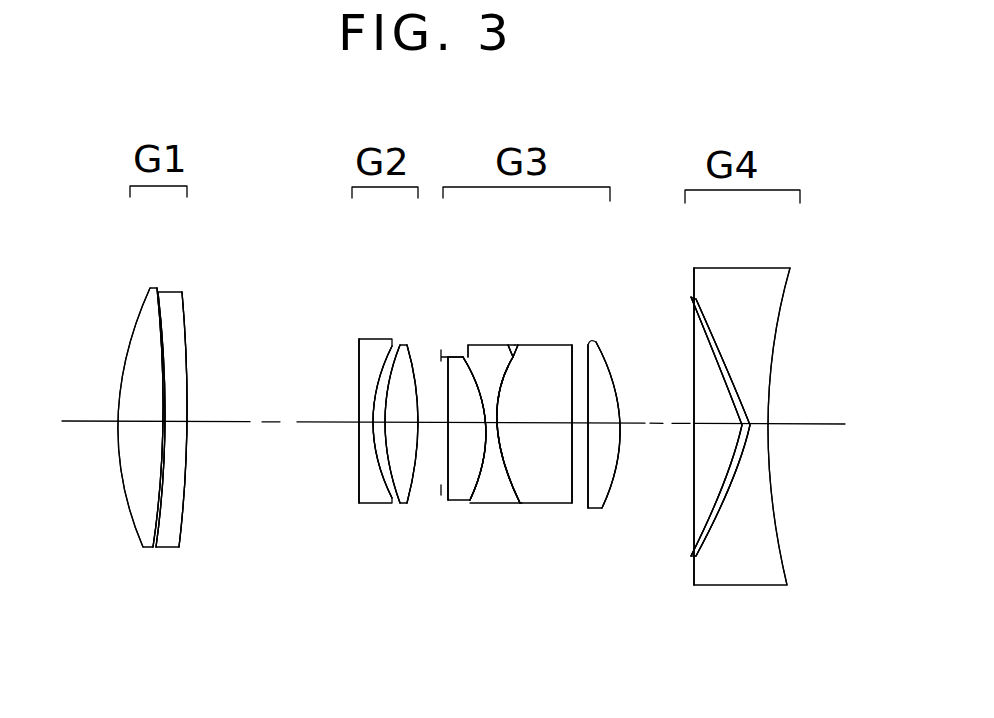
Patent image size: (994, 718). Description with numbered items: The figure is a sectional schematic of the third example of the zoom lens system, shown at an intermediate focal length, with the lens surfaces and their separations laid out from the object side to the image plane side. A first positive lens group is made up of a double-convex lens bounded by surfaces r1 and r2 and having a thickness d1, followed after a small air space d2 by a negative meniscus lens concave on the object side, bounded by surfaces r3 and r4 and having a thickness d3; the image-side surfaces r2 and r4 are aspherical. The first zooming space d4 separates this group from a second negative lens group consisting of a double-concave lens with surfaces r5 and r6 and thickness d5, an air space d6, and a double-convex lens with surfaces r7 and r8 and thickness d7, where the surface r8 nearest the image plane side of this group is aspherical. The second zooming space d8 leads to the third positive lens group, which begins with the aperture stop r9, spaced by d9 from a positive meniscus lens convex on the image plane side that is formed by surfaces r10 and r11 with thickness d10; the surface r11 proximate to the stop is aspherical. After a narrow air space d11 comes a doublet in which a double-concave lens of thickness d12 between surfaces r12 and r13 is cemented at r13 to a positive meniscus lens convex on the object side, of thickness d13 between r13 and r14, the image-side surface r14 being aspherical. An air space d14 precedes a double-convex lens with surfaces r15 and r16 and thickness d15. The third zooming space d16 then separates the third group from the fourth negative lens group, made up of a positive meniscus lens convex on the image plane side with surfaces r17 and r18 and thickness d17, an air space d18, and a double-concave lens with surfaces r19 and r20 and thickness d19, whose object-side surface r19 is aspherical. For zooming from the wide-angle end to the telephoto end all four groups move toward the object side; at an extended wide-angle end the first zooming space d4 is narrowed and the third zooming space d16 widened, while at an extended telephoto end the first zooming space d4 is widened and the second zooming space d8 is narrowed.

The radius of curvature of first lens surface r1 is at (142, 316).
The radius of curvature of second lens surface r2 is at (147, 320).
The radius of curvature of third lens surface r3 is at (164, 320).
The radius of curvature of fourth lens surface r4 is at (186, 320).
The radius of curvature of fifth lens surface r5 is at (359, 361).
The radius of curvature of sixth lens surface r6 is at (372, 339).
The radius of curvature of seventh lens surface r7 is at (401, 345).
The radius of curvature of eighth lens surface r8 is at (413, 355).
The aperture stop r9 is at (438, 370).
The radius of curvature of tenth lens surface r10 is at (458, 357).
The radius of curvature of eleventh lens surface r11 is at (468, 345).
The radius of curvature of twelfth lens surface r12 is at (490, 345).
The radius of curvature of thirteenth lens surface r13 is at (508, 345).
The radius of curvature of fourteenth lens surface r14 is at (572, 373).
The radius of curvature of fifteenth lens surface r15 is at (588, 362).
The radius of curvature of sixteenth lens surface r16 is at (602, 358).
The radius of curvature of seventeenth lens surface r17 is at (690, 323).
The radius of curvature of eighteenth lens surface r18 is at (716, 327).
The radius of curvature of nineteenth lens surface r19 is at (727, 325).
The radius of curvature of twentieth lens surface r20 is at (790, 298).
The separation between first and second lens surfaces d1 is at (140, 417).
The separation between second and third lens surfaces d2 is at (163, 447).
The separation between third and fourth lens surfaces d3 is at (176, 423).
The first zooming space d4 is at (269, 419).
The separation between fifth and sixth lens surfaces d5 is at (370, 424).
The separation between sixth and seventh lens surfaces d6 is at (381, 442).
The separation between seventh and eighth lens surfaces d7 is at (400, 425).
The second zooming space d8 is at (425, 423).
The separation between aperture stop and tenth lens surface d9 is at (443, 425).
The separation between tenth and eleventh lens surfaces d10 is at (460, 430).
The separation between eleventh and twelfth lens surfaces d11 is at (474, 428).
The separation between twelfth and thirteenth lens surfaces d12 is at (441, 490).
The separation between thirteenth and fourteenth lens surfaces d13 is at (534, 424).
The separation between fourteenth and fifteenth lens surfaces d14 is at (580, 428).
The separation between fifteenth and sixteenth lens surfaces d15 is at (600, 428).
The third zooming space d16 is at (669, 426).
The separation between seventeenth and eighteenth lens surfaces d17 is at (716, 427).
The separation between eighteenth and nineteenth lens surfaces d18 is at (705, 442).
The separation between nineteenth and twentieth lens surfaces d19 is at (758, 426).